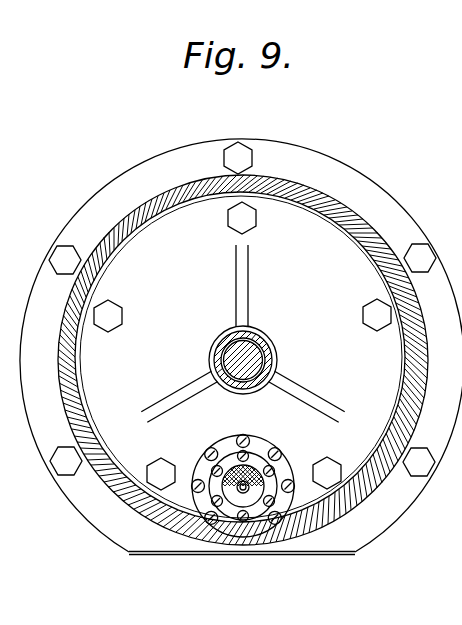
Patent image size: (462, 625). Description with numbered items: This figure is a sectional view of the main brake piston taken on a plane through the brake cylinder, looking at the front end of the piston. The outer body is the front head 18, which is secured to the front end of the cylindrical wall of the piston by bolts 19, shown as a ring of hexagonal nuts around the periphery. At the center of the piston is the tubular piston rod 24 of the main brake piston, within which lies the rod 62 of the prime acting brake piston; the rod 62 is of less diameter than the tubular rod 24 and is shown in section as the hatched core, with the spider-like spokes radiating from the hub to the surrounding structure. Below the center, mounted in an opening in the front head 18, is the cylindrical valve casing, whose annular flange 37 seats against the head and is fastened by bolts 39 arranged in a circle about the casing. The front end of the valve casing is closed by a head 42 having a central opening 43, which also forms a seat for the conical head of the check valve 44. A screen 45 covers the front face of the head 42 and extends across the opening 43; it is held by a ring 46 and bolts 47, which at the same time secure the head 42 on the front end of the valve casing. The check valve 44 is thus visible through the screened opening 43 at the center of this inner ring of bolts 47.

The front head 18 is at (241, 347).
The bolts 19 is at (121, 318).
The piston rod 24 is at (209, 352).
The rod of prime acting brake piston 62 is at (247, 359).
The annular flange 37 is at (218, 441).
The bolts 39 is at (196, 481).
The screen 45 is at (262, 468).
The ring 46 is at (274, 482).
The bolts 47 is at (250, 466).
The head 42 is at (252, 498).
The central opening 43 is at (251, 497).
The check valve 44 is at (240, 492).